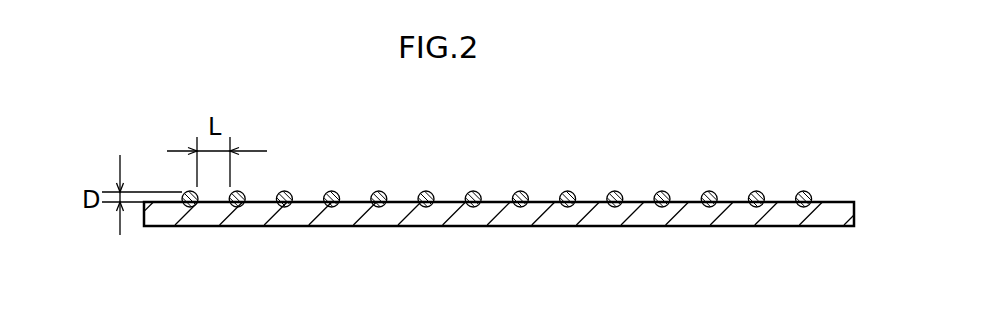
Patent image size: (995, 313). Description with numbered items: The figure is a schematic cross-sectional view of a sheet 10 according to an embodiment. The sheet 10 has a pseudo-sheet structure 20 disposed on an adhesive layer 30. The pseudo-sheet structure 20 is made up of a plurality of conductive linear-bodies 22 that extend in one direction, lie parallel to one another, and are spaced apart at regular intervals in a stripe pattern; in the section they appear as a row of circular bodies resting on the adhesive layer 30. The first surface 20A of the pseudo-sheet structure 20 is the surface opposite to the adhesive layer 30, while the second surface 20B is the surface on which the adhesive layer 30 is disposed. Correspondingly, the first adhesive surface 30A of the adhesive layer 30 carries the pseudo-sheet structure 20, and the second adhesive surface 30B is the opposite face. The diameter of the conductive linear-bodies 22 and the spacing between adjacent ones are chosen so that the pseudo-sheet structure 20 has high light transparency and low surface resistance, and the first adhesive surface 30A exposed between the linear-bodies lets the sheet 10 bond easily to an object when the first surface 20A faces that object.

The sheet 10 is at (131, 116).
The pseudo-sheet structure 20 is at (815, 192).
The first surface 20A is at (753, 186).
The second surface 20B is at (758, 209).
The conductive linear-bodies 22 is at (615, 191).
The adhesive layer 30 is at (855, 220).
The first adhesive surface 30A is at (838, 198).
The second adhesive surface 30B is at (832, 229).